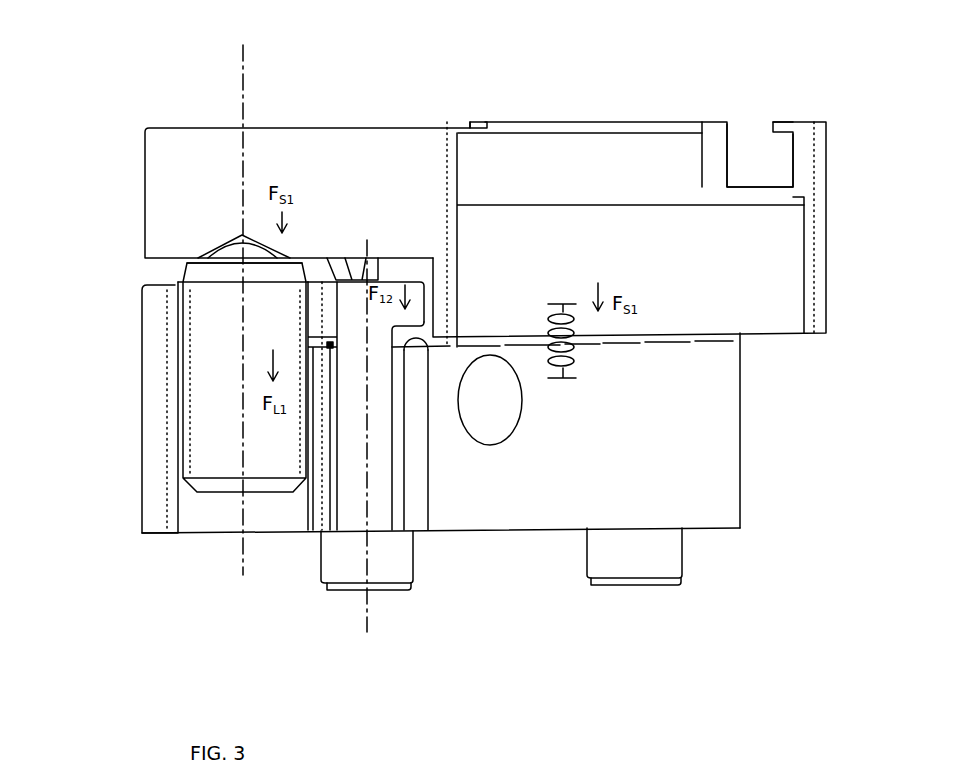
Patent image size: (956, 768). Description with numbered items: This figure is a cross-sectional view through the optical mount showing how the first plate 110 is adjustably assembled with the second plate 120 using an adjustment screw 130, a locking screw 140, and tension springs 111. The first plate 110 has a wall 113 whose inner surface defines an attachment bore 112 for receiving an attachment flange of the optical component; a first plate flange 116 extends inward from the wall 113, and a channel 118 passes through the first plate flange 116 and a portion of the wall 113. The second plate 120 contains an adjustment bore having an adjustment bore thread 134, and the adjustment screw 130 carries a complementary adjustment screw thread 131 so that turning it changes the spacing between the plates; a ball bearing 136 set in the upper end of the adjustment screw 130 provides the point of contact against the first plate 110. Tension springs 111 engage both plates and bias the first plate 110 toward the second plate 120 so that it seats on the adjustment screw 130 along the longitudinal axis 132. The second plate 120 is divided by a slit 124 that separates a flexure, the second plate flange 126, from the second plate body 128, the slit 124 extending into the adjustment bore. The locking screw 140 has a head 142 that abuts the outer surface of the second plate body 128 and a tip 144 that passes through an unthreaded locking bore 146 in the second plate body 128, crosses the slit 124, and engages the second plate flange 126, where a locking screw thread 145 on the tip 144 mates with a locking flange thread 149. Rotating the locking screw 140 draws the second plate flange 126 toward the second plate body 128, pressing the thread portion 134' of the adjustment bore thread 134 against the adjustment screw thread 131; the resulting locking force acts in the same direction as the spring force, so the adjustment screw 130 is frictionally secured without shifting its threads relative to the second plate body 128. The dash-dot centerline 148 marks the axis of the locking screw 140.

The first plate 110 is at (142, 150).
The tension spring 111 is at (330, 264).
The attachment bore 112 is at (765, 325).
The wall 113 is at (584, 157).
The first plate flange 116 is at (473, 123).
The channel 118 is at (745, 120).
The second plate 120 is at (152, 490).
The slit 124 is at (393, 320).
The second plate flange 126 is at (418, 315).
The second plate body 128 is at (723, 453).
The adjustment screw 130 is at (207, 394).
The adjustment screw thread 131 is at (188, 452).
The longitudinal axis 132 is at (243, 76).
The adjustment bore thread 134 is at (246, 454).
The adjustment bore thread portion 134' is at (246, 291).
The ball bearing 136 is at (232, 252).
The locking screw 140 is at (397, 589).
The head 142 is at (402, 567).
The tip 144 is at (352, 308).
The locking screw thread 145 is at (397, 327).
The locking bore 146 is at (398, 496).
The center axis 148 is at (370, 623).
The locking flange thread 149 is at (430, 342).